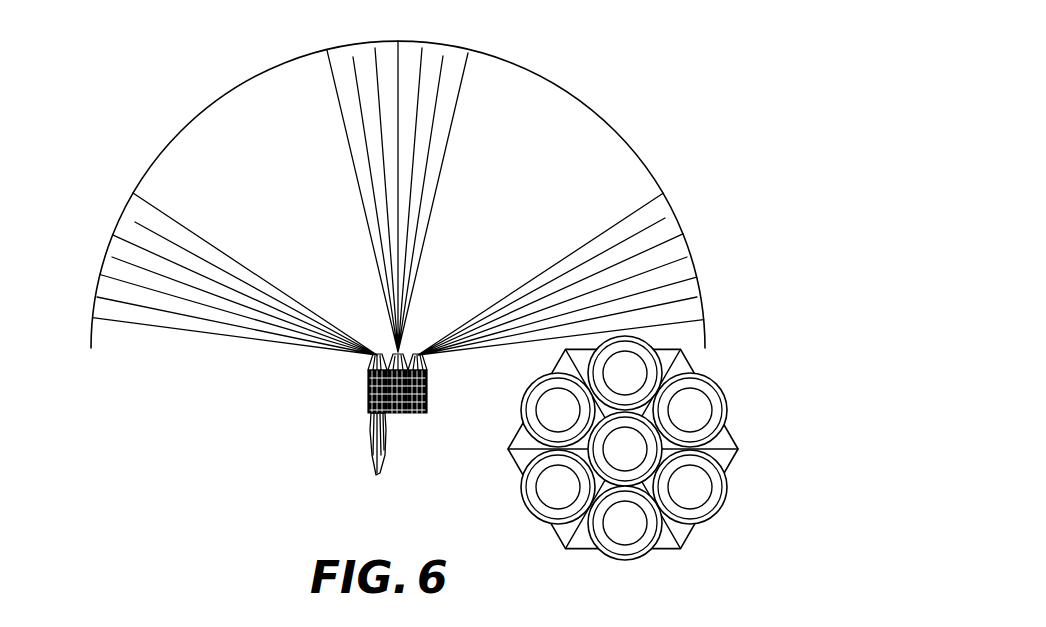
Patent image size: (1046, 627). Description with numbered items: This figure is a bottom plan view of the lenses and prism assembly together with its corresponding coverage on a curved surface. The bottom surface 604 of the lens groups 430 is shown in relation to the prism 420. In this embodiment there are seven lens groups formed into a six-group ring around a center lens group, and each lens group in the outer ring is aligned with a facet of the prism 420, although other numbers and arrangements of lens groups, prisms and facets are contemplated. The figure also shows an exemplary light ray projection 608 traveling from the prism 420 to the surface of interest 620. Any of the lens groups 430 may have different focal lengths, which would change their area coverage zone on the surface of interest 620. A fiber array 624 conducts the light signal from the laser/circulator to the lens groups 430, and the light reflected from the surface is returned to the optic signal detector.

The surface of interest 620 is at (220, 98).
The light ray projection 608 is at (178, 332).
The prism 420 is at (372, 368).
The lens groups 430 is at (427, 390).
The bottom surface 604 is at (688, 410).
The fiber array 624 is at (369, 443).